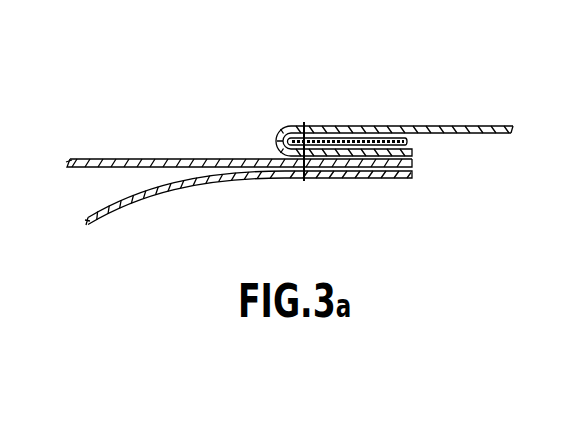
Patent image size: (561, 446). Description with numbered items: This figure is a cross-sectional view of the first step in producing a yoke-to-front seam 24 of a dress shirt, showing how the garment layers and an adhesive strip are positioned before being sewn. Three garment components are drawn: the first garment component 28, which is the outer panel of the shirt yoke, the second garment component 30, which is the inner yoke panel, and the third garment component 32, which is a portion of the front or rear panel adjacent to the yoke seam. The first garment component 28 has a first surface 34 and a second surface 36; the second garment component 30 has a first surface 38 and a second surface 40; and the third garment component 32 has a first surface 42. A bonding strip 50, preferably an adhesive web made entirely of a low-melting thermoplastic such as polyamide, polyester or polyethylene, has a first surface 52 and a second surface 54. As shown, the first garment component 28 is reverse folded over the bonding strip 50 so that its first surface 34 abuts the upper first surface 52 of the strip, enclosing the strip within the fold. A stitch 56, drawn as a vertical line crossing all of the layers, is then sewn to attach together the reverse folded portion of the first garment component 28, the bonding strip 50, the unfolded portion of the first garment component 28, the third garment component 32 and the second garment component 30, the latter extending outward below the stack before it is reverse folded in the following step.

The yoke-to-front seam 24 is at (279, 131).
The first garment component 28 is at (514, 130).
The second garment component 30 is at (98, 225).
The third garment component 32 is at (93, 159).
The first surface 34 is at (487, 134).
The second surface 36 is at (465, 126).
The first surface 38 is at (112, 213).
The second surface 40 is at (188, 195).
The first surface 42 is at (180, 159).
The bonding strip 50 is at (407, 142).
The first surface 52 is at (344, 178).
The second surface 54 is at (346, 180).
The stitch 56 is at (305, 123).